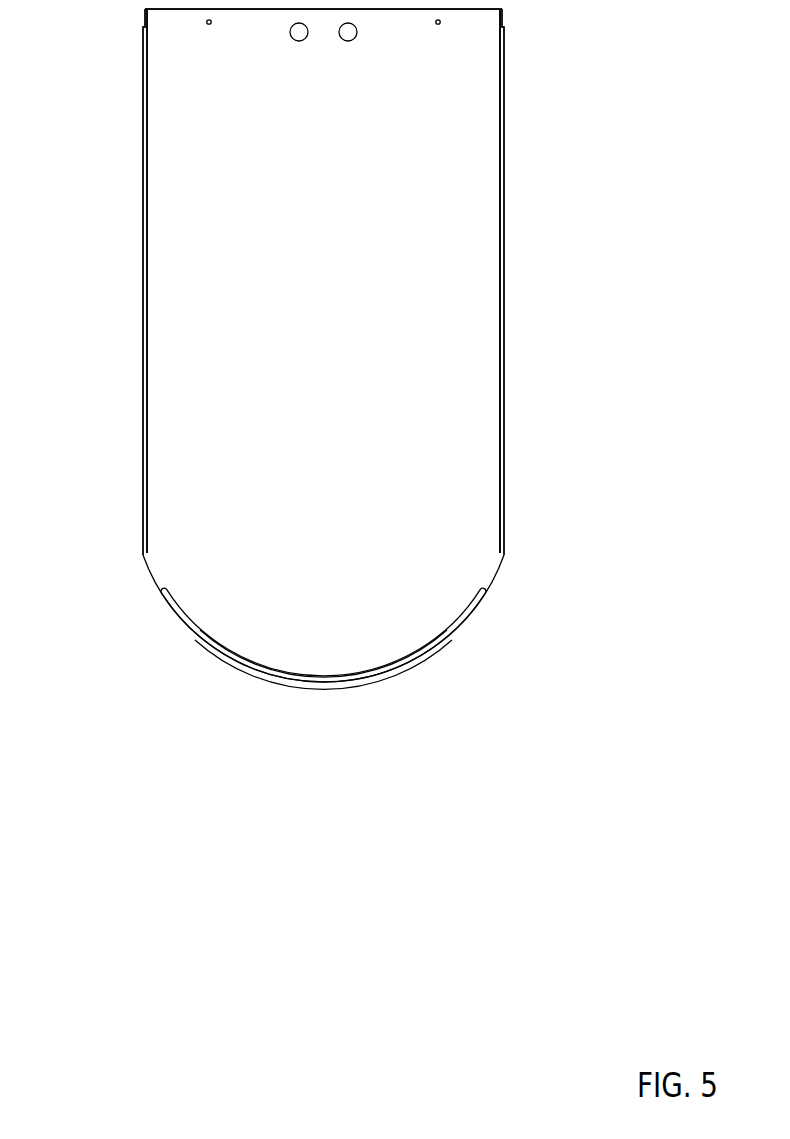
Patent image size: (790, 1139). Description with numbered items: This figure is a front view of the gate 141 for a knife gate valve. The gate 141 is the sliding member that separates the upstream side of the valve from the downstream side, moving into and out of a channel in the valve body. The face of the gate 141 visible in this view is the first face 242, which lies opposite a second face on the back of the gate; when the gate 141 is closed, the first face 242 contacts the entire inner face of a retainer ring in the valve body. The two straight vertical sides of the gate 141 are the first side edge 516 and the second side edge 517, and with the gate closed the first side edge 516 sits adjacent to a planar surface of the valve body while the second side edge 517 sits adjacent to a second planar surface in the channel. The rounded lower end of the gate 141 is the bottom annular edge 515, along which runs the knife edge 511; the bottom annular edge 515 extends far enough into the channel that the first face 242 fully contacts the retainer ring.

The gate 141 is at (256, 247).
The first face 242 is at (287, 480).
The first side edge 516 is at (138, 420).
The second side edge 517 is at (501, 310).
The knife edge 511 is at (435, 638).
The bottom annular edge 515 is at (230, 661).